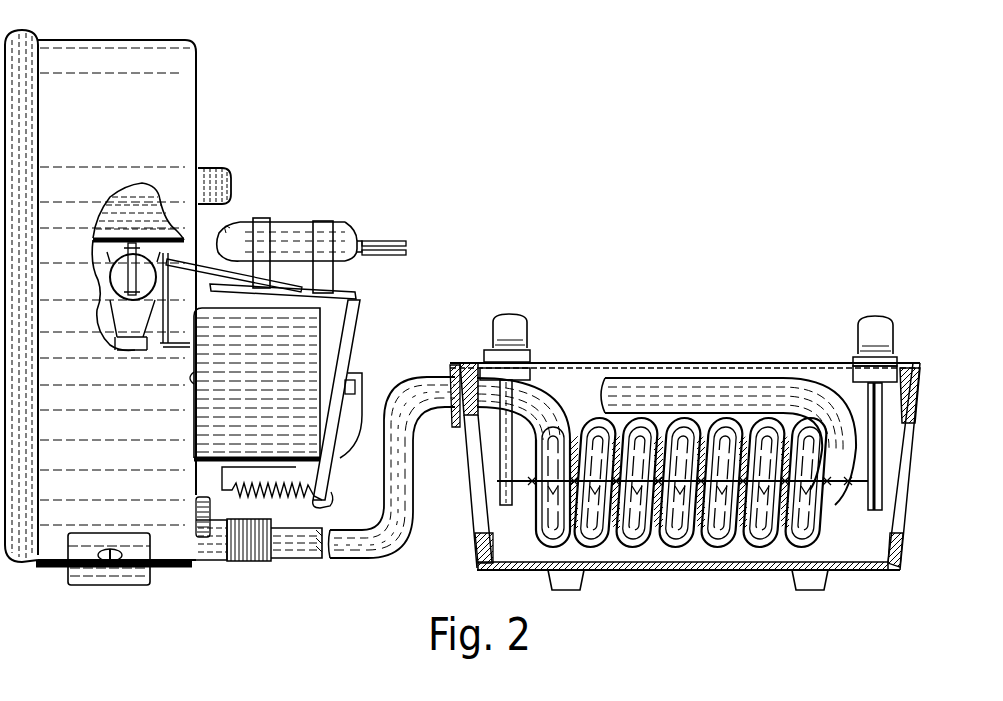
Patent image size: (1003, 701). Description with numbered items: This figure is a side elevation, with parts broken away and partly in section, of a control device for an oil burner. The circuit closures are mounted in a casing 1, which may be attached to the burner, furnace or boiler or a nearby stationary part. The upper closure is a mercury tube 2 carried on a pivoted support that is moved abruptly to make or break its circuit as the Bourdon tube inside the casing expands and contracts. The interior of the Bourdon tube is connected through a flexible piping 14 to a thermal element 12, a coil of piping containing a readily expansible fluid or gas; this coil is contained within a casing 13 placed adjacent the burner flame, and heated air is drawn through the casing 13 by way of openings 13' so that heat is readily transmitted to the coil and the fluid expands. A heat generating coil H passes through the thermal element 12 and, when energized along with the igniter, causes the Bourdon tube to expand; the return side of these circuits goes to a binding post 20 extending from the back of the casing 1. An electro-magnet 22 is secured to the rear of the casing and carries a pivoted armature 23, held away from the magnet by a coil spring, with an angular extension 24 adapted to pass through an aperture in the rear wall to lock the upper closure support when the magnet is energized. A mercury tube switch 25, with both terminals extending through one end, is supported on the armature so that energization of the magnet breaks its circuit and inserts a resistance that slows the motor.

The casing 1 is at (180, 84).
The mercury tube 2 is at (123, 268).
The binding post 20 is at (217, 168).
The electro-magnet 22 is at (297, 352).
The pivoted armature 23 is at (350, 364).
The angular extension 24 is at (232, 268).
The mercury tube switch 25 is at (294, 232).
The flexible piping 14 is at (412, 501).
The thermal element 12 is at (642, 545).
The casing 13 is at (697, 452).
The openings 13' is at (935, 400).
The heat generating coil H is at (855, 495).